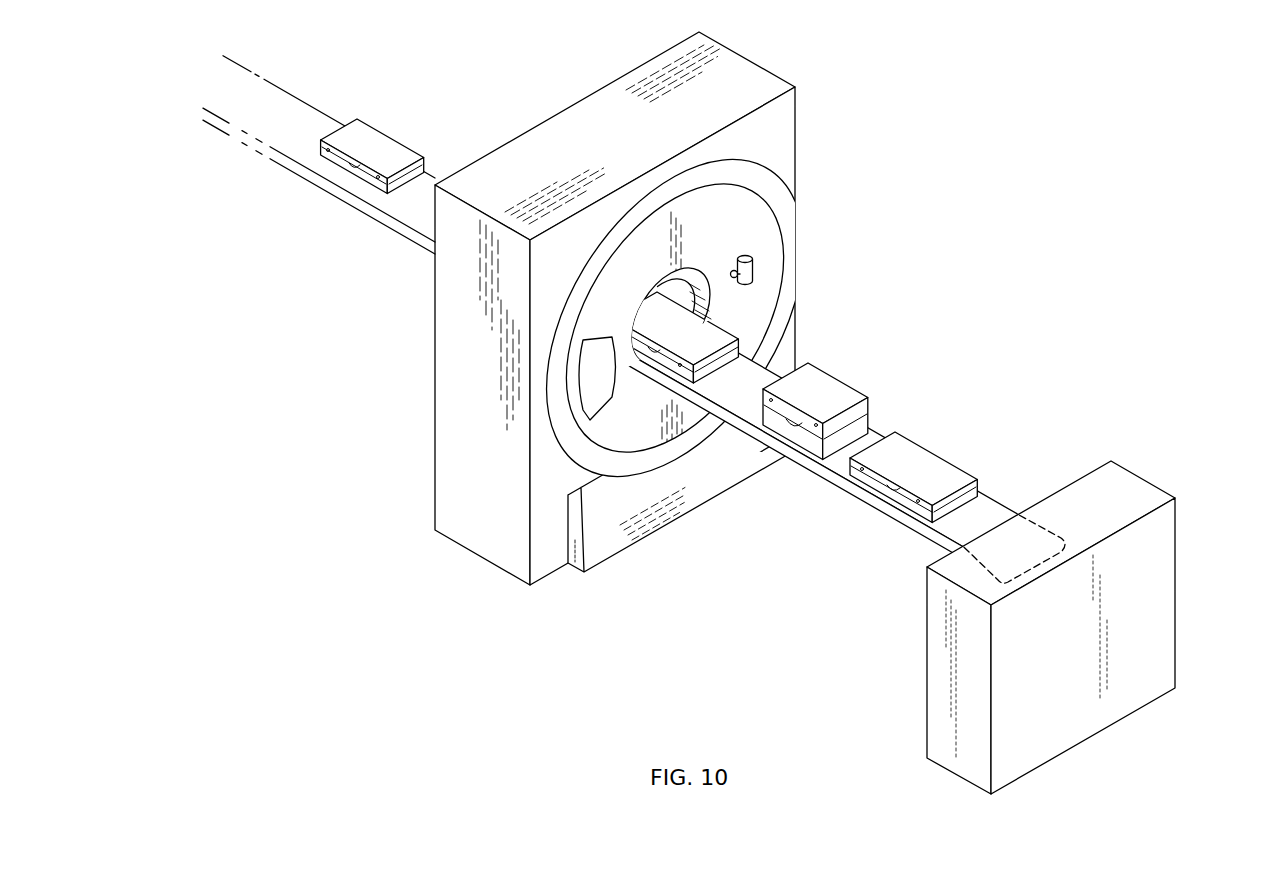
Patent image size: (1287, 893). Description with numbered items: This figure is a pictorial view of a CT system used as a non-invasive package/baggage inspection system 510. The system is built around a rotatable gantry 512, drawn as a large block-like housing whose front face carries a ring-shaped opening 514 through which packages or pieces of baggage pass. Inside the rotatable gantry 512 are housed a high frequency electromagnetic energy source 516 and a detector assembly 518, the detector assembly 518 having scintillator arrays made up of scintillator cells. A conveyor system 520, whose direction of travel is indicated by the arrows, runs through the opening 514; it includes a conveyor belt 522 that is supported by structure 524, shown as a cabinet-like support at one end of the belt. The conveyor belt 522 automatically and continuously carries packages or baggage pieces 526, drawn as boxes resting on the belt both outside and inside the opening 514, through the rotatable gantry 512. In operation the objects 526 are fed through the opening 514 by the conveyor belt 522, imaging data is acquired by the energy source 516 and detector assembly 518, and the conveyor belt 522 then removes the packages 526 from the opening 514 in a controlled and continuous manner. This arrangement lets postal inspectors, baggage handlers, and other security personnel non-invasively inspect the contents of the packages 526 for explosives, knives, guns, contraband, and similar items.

The package/baggage inspection system 510 is at (941, 318).
The rotatable gantry 512 is at (737, 222).
The opening 514 is at (706, 263).
The high frequency electromagnetic energy source 516 is at (753, 274).
The detector assembly 518 is at (601, 343).
The conveyor system 520 is at (216, 158).
The conveyor belt 522 is at (407, 208).
The structure 524 is at (1165, 588).
The packages or baggage pieces 526 is at (382, 143).